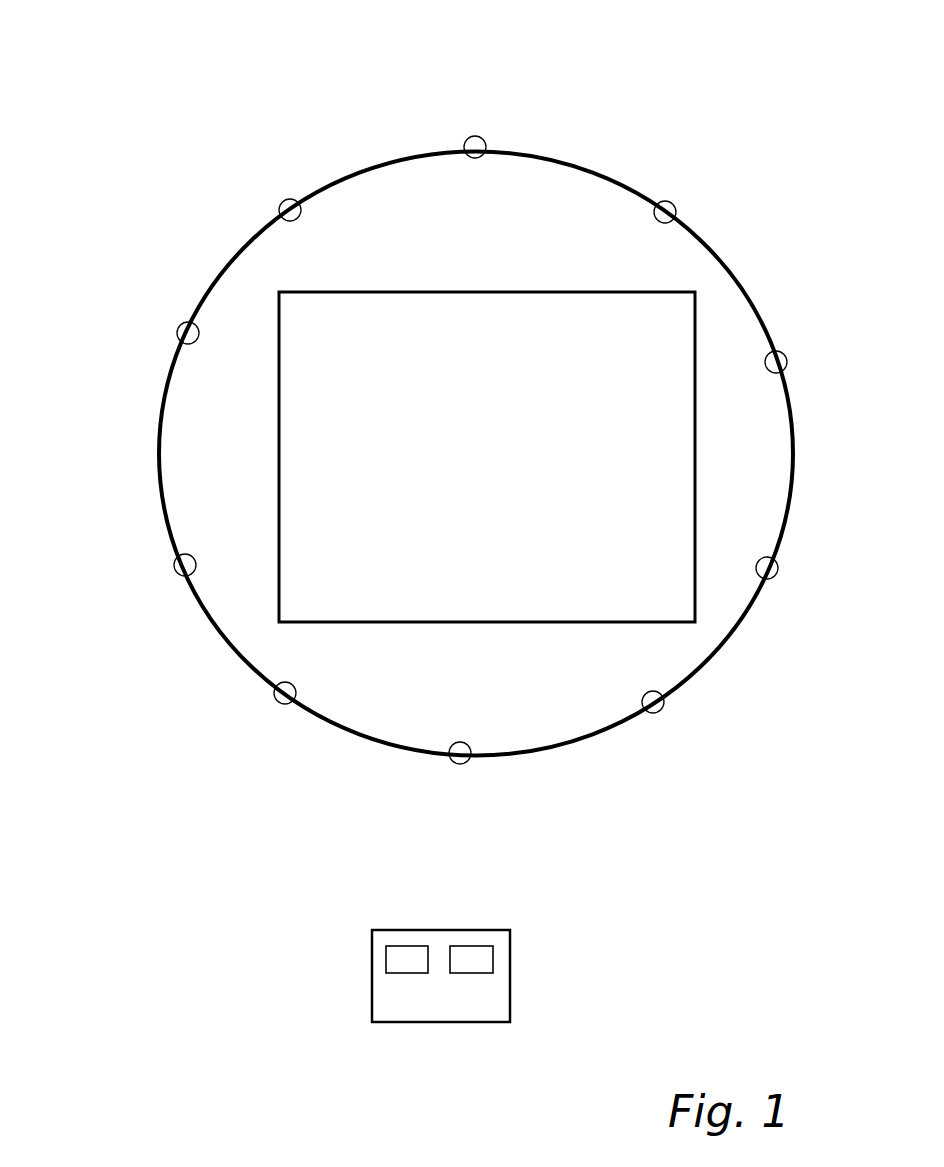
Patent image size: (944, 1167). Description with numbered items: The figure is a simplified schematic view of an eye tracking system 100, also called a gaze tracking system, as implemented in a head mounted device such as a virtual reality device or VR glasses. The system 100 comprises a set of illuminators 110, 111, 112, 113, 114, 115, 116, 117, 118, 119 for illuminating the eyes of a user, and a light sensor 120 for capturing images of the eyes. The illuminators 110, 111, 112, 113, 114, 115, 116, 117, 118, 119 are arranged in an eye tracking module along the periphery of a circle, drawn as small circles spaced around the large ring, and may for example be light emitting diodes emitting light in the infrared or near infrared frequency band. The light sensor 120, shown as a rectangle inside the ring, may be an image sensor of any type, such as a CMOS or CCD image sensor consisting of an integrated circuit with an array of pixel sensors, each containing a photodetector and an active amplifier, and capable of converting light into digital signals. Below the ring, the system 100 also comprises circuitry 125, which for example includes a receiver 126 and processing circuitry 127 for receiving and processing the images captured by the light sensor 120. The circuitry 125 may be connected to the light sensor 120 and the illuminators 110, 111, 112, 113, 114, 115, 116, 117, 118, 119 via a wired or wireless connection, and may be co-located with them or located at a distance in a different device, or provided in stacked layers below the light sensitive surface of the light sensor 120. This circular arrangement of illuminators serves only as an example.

The eye tracking system 100 is at (118, 768).
The illuminator 110 is at (185, 322).
The illuminator 111 is at (288, 199).
The illuminator 112 is at (475, 136).
The illuminator 113 is at (668, 201).
The illuminator 114 is at (779, 351).
The illuminator 115 is at (772, 580).
The illuminator 116 is at (657, 712).
The illuminator 117 is at (461, 765).
The illuminator 118 is at (283, 704).
The illuminator 119 is at (180, 577).
The light sensor 120 is at (497, 292).
The circuitry 125 is at (426, 1005).
The receiver 126 is at (395, 946).
The processing circuitry 127 is at (483, 944).